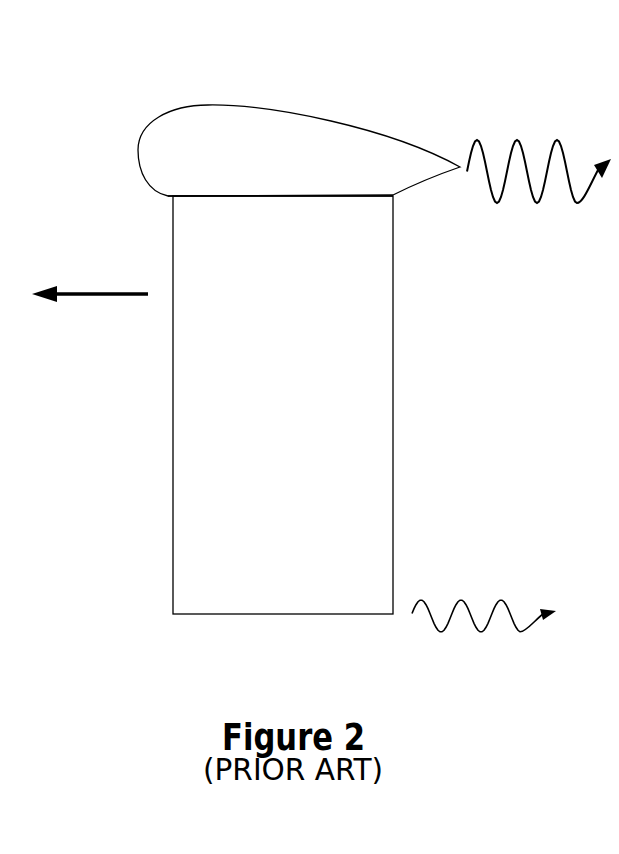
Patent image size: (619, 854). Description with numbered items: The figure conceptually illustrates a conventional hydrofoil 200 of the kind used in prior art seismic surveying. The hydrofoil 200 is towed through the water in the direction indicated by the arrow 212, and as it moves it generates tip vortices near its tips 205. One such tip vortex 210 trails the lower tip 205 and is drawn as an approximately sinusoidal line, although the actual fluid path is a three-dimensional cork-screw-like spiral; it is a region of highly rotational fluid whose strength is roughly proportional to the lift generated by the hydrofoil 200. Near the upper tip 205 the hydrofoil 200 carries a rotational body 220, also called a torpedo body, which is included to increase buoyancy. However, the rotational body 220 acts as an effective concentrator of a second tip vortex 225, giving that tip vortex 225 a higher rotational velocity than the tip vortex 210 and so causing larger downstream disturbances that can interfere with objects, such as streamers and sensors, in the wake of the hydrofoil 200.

The hydrofoil 200 is at (170, 424).
The tip 205 is at (414, 203).
The tip vortex 210 is at (484, 577).
The arrow 212 is at (127, 292).
The rotational body 220 is at (185, 103).
The tip vortex 225 is at (553, 111).